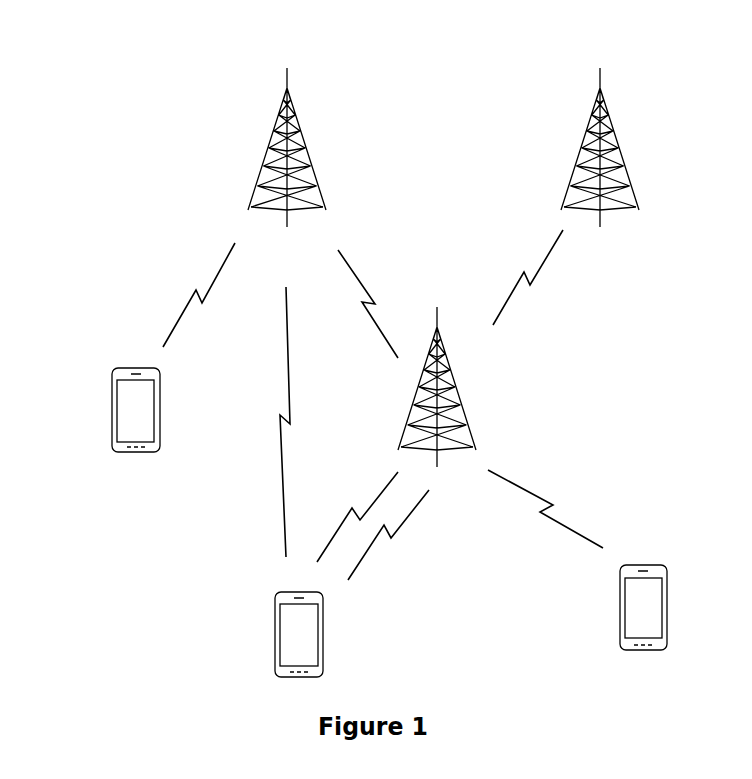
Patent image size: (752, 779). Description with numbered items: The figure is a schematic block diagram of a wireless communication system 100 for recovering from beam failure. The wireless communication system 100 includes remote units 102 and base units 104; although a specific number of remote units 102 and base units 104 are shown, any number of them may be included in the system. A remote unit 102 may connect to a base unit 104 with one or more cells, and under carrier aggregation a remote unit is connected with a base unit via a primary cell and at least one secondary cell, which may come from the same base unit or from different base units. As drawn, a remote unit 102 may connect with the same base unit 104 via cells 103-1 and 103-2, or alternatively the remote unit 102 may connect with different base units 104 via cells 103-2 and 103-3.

The wireless communication system 100 is at (145, 95).
The remote unit 102 is at (112, 400).
The base unit 104 is at (268, 150).
The cell 103-1 is at (407, 522).
The cell 103-2 is at (380, 491).
The cell 103-3 is at (283, 498).